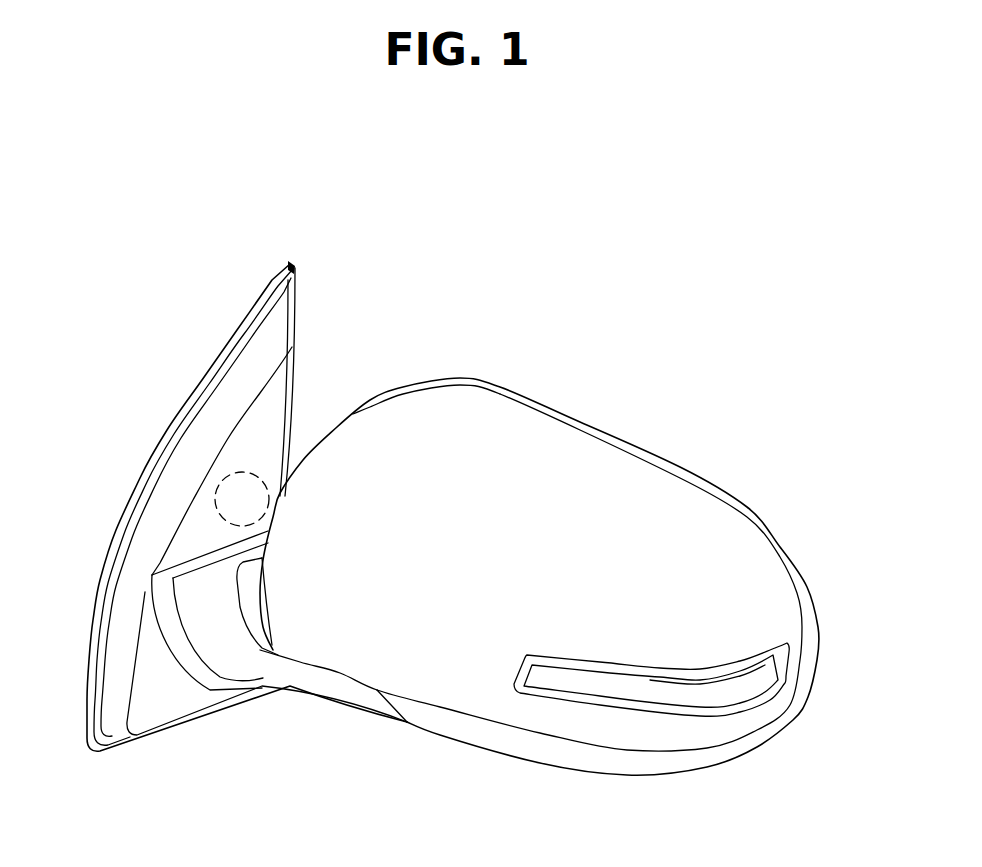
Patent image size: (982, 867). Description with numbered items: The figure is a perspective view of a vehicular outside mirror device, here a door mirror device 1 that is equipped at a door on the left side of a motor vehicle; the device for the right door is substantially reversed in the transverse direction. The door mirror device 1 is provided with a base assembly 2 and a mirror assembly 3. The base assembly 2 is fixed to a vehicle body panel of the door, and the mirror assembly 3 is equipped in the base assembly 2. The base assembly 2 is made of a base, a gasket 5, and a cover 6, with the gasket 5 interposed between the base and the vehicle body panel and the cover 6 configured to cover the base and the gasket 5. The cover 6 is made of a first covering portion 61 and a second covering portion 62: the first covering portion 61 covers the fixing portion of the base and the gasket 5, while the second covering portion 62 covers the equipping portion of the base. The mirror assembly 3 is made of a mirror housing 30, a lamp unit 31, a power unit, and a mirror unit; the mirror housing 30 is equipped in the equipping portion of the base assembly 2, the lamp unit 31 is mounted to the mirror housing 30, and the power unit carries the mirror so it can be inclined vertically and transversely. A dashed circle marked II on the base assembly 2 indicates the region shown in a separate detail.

The door mirror device 1 is at (378, 341).
The base assembly 2 is at (221, 344).
The mirror assembly 3 is at (543, 403).
The gasket 5 is at (268, 291).
The mirror housing 30 is at (604, 504).
The lamp unit 31 is at (733, 693).
The cover 6 is at (285, 788).
The first covering portion 61 is at (158, 706).
The second covering portion 62 is at (263, 667).
The section II is at (235, 473).